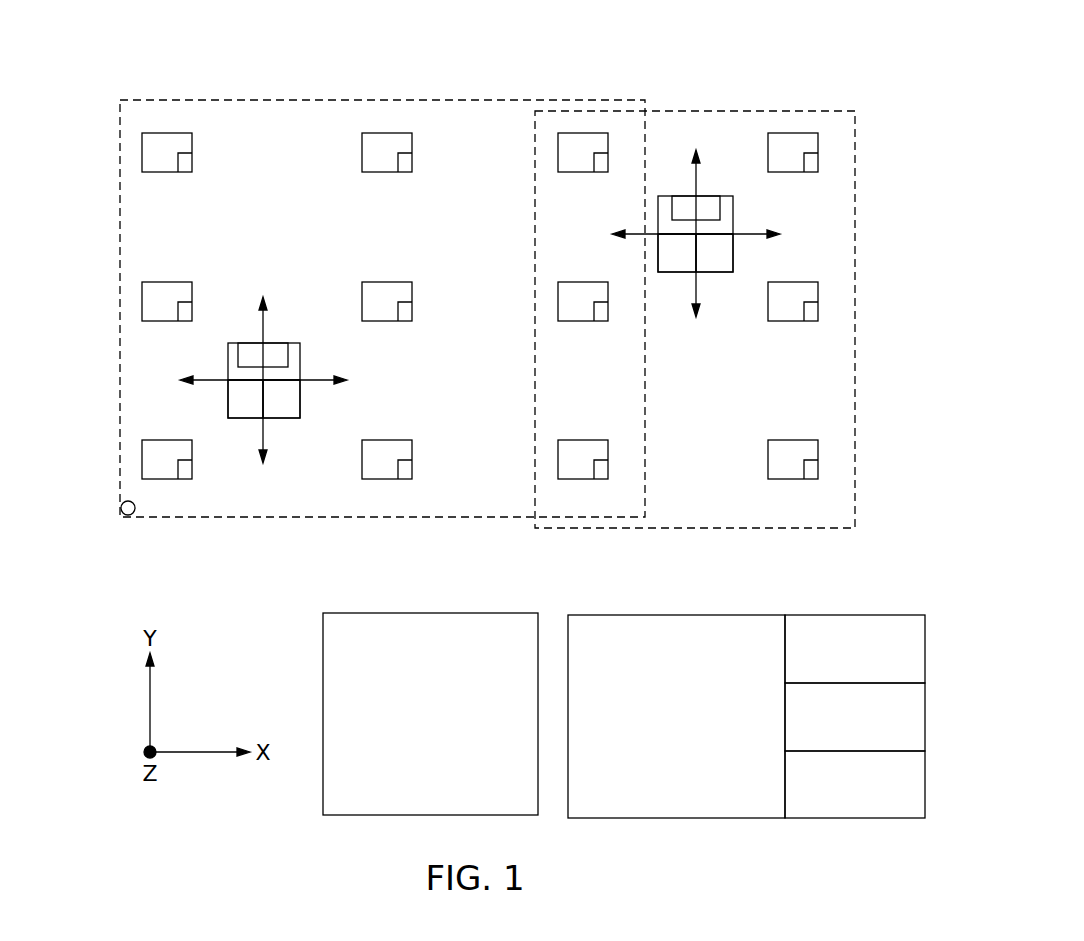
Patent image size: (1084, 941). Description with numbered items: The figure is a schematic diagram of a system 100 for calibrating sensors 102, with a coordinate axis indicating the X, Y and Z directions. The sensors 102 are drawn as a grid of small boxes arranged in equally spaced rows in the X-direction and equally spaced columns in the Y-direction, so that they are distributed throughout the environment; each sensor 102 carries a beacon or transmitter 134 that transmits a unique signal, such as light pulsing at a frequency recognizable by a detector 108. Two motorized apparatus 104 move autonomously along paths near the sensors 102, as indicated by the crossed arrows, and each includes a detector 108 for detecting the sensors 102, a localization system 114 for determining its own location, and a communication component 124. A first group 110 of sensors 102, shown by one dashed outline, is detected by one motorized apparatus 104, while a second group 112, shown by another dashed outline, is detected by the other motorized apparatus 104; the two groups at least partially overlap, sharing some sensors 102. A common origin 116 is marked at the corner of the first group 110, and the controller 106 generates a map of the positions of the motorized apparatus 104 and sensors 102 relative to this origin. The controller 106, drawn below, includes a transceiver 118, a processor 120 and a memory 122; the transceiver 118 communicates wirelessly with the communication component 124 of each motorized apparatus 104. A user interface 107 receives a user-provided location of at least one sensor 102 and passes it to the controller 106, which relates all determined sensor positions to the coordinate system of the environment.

The system 100 is at (863, 63).
The sensor 102 is at (142, 152).
The motorized apparatus 104 is at (228, 365).
The controller 106 is at (657, 729).
The user interface 107 is at (410, 725).
The detector 108 is at (288, 345).
The first group 110 is at (120, 385).
The second group 112 is at (855, 516).
The localization system 114 is at (288, 418).
The common origin 116 is at (121, 508).
The transceiver 118 is at (837, 662).
The processor 120 is at (837, 730).
The memory 122 is at (837, 797).
The communication component 124 is at (240, 418).
The beacon or transmitter 134 is at (192, 160).